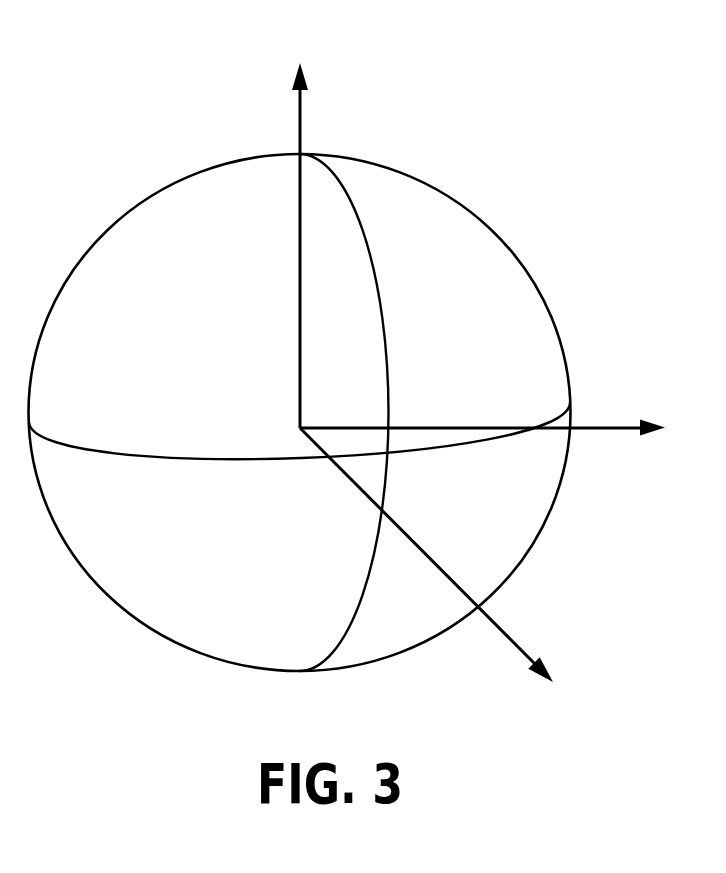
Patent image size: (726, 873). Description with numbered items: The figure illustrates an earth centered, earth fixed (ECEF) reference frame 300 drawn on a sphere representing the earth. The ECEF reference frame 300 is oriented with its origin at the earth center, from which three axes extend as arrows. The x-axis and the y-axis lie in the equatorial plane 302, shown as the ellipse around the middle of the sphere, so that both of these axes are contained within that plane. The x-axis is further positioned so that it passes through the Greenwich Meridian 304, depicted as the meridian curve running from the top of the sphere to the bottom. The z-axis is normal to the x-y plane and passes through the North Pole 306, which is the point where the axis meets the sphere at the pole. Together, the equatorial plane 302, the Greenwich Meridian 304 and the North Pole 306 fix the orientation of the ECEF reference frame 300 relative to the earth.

The earth centered, earth fixed (ECEF) reference frame 300 is at (487, 108).
The equatorial plane 302 is at (207, 458).
The Greenwich Meridian 304 is at (387, 343).
The North Pole 306 is at (301, 153).